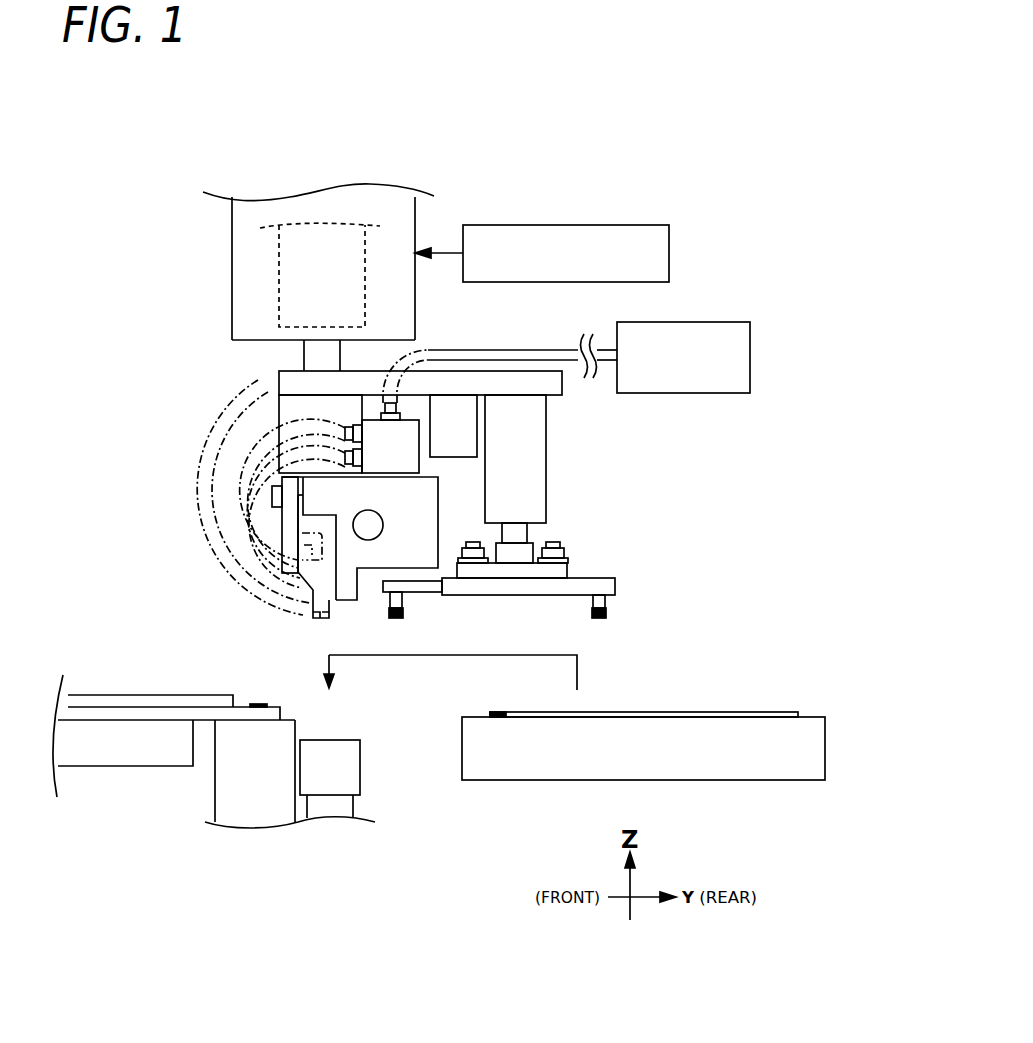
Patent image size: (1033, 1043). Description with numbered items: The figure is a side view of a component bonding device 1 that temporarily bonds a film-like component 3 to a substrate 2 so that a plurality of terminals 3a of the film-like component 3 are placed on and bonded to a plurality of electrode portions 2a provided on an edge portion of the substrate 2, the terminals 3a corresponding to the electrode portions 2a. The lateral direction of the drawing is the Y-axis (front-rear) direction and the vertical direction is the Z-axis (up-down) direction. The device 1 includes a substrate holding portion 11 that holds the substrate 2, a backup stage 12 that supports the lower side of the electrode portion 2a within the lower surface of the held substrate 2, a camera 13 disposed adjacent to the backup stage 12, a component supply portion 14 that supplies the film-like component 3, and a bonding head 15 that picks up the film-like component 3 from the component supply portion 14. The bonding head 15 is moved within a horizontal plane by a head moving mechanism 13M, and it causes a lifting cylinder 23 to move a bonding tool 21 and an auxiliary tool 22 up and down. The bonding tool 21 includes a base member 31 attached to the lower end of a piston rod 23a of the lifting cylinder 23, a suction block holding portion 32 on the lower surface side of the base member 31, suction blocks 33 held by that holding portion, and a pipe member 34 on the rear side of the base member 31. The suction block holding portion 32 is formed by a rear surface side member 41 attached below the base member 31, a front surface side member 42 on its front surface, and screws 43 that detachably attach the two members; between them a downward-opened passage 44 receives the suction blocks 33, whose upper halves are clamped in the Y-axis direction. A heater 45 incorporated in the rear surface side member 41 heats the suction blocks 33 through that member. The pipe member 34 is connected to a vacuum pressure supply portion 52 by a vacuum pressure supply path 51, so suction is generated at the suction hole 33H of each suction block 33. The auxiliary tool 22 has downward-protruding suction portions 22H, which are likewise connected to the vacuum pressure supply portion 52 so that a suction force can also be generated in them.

The component bonding device 1 is at (403, 80).
The substrate 2 is at (110, 695).
The electrode portions 2a is at (263, 704).
The film-like component 3 is at (755, 713).
The terminals 3a is at (502, 715).
The substrate holding portion 11 is at (100, 758).
The backup stage 12 is at (223, 792).
The camera 13 is at (355, 767).
The head moving mechanism 13M is at (597, 230).
The component supply portion 14 is at (742, 777).
The bonding head 15 is at (238, 264).
The bonding tool 21 is at (252, 411).
The auxiliary tool 22 is at (610, 551).
The suction portions 22H is at (402, 613).
The lifting cylinder 23 is at (280, 307).
The piston rod 23a is at (309, 352).
The base member 31 is at (290, 426).
The suction block holding portion 32 is at (265, 527).
The suction blocks 33 is at (318, 577).
The suction hole 33H is at (321, 618).
The pipe member 34 is at (410, 440).
The rear surface side member 41 is at (430, 495).
The front surface side member 42 is at (284, 550).
The screws 43 is at (272, 497).
The passage 44 is at (350, 553).
The heater 45 is at (383, 521).
The vacuum pressure supply path 51 is at (470, 352).
The vacuum pressure supply portion 52 is at (724, 330).